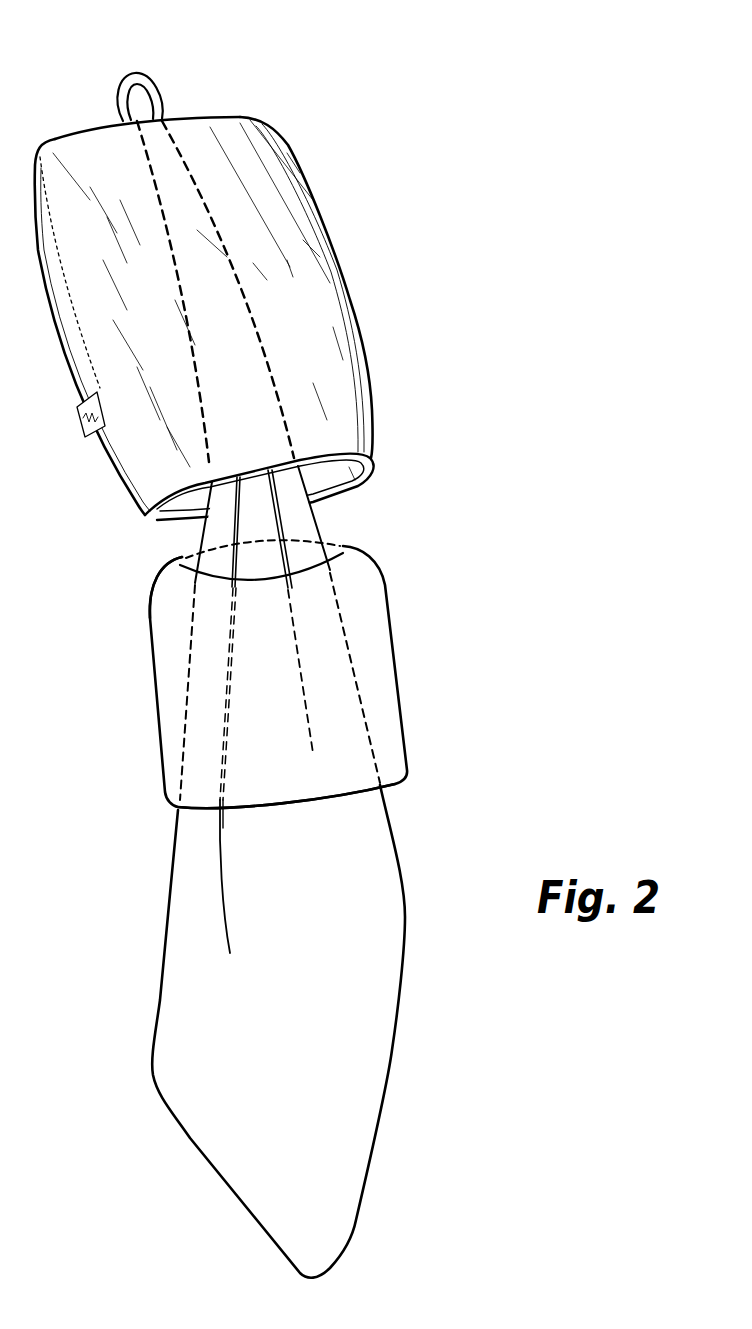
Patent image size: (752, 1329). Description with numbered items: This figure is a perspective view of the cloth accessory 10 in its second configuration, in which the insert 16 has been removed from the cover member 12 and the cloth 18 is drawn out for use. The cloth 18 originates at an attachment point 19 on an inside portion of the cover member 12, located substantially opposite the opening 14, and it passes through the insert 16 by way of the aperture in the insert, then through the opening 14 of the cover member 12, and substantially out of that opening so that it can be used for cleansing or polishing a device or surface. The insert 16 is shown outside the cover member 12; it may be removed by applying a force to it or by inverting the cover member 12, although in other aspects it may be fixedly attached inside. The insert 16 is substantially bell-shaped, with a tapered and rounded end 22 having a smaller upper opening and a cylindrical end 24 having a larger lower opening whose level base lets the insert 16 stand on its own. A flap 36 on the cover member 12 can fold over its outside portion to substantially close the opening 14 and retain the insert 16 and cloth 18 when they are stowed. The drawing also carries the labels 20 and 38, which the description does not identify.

The cloth accessory 10 is at (284, 86).
The cover member 12 is at (322, 213).
The opening 14 is at (157, 520).
The insert 16 is at (353, 456).
The cloth 18 is at (178, 1027).
The attachment point 19 is at (117, 118).
The collar opening 20 is at (345, 541).
The tapered and rounded end 22 is at (180, 565).
The cylindrical end 24 is at (388, 784).
The flap 36 is at (108, 458).
The hanging loop 38 is at (143, 73).